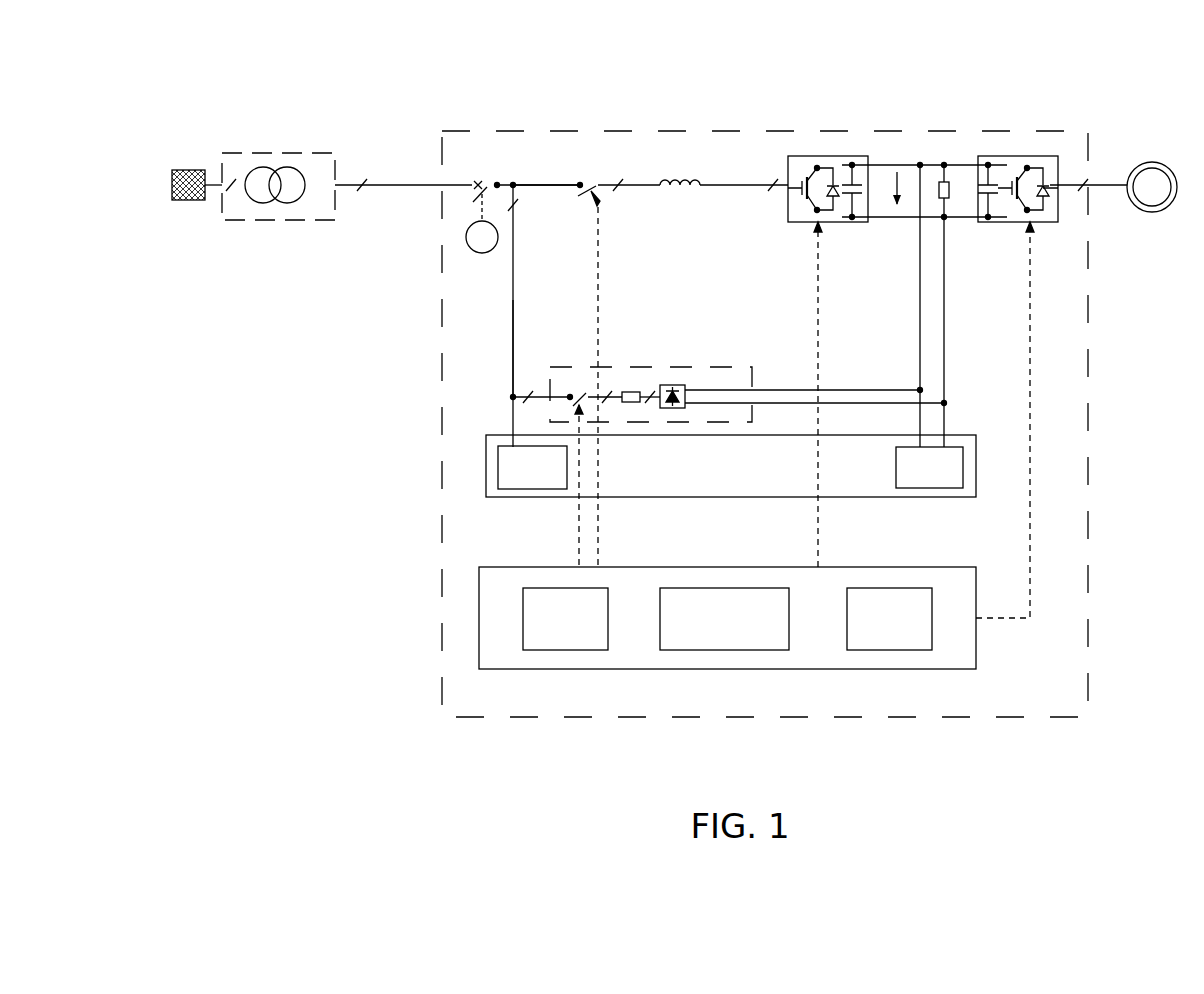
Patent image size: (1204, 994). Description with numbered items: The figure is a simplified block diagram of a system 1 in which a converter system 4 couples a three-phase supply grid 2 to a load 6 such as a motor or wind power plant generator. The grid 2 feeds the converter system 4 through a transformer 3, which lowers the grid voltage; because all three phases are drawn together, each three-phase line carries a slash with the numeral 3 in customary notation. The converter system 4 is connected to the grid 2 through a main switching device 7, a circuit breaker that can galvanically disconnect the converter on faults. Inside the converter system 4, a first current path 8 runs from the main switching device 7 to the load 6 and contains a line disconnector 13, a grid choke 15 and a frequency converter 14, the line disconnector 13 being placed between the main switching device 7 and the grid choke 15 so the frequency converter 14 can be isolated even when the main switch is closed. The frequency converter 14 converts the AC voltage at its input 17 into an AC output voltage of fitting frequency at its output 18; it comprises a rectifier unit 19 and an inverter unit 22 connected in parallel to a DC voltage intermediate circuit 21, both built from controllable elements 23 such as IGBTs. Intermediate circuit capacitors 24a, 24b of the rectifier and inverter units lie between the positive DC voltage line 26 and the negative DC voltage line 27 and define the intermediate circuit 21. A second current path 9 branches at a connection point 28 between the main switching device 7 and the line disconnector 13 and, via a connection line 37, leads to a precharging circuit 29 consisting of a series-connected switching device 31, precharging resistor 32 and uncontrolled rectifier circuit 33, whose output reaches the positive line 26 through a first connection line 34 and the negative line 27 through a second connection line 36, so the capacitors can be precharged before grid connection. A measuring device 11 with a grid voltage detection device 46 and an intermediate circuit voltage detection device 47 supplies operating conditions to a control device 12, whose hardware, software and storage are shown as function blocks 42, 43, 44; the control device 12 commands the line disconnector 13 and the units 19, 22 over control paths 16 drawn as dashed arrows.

The system 1 is at (230, 85).
The supply grid 2 is at (188, 168).
The transformer 3 is at (292, 152).
The converter system 4 is at (450, 122).
The load 6 is at (1170, 166).
The main switching device 7 is at (486, 180).
The first current path 8 is at (553, 183).
The second current path 9 is at (515, 268).
The measuring device 11 is at (678, 472).
The control device 12 is at (680, 640).
The line disconnector 13 is at (590, 180).
The frequency converter 14 is at (795, 148).
The grid choke 15 is at (672, 178).
The control paths 16 is at (600, 257).
The input 17 is at (786, 157).
The output 18 is at (1066, 158).
The rectifier unit 19 is at (850, 163).
The DC voltage intermediate circuit 21 is at (950, 157).
The inverter unit 22 is at (1050, 154).
The controllable elements 23 is at (815, 168).
The intermediate circuit capacitor 24a is at (856, 192).
The intermediate circuit capacitor 24b is at (992, 184).
The positive DC voltage line 26 is at (897, 170).
The negative DC voltage line 27 is at (955, 224).
The connection point 28 is at (513, 183).
The precharging circuit 29 is at (545, 366).
The switching device 31 is at (578, 382).
The precharging resistor 32 is at (633, 389).
The uncontrolled rectifier circuit 33 is at (680, 383).
The first connection line 34 is at (845, 388).
The second connection line 36 is at (888, 401).
The connection line 37 is at (513, 300).
The function block 42 is at (725, 652).
The function block 43 is at (565, 652).
The function block 44 is at (888, 652).
The grid voltage detection device 46 is at (498, 478).
The intermediate circuit voltage detection device 47 is at (928, 490).